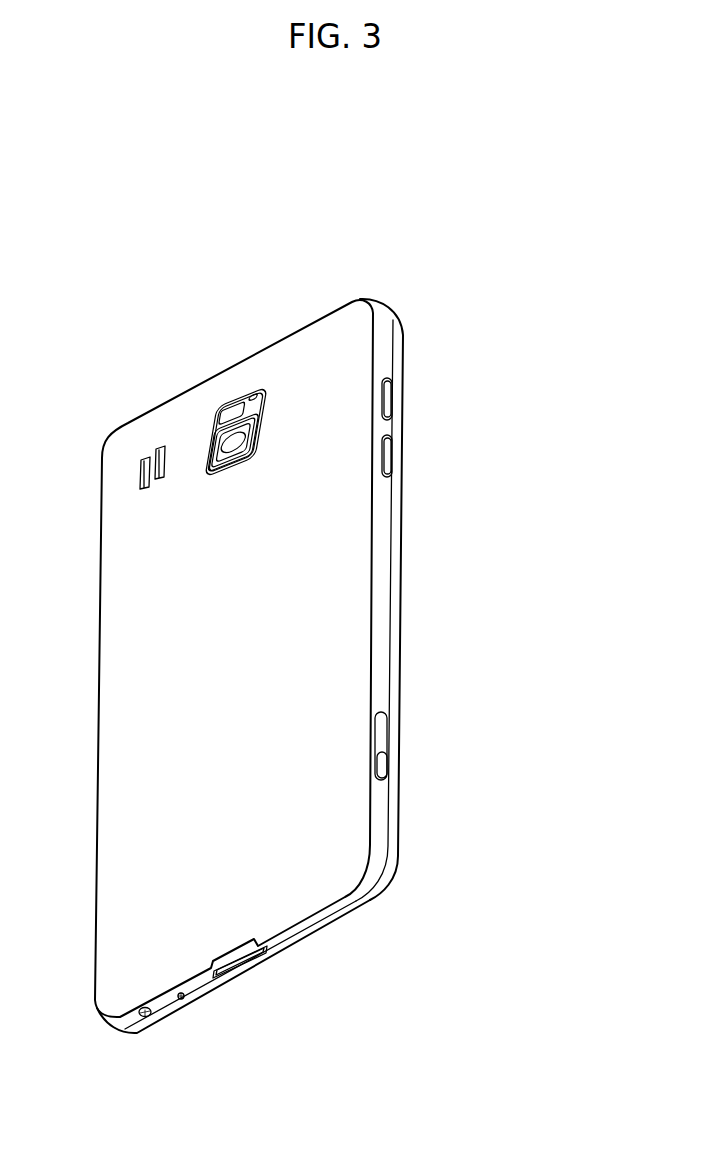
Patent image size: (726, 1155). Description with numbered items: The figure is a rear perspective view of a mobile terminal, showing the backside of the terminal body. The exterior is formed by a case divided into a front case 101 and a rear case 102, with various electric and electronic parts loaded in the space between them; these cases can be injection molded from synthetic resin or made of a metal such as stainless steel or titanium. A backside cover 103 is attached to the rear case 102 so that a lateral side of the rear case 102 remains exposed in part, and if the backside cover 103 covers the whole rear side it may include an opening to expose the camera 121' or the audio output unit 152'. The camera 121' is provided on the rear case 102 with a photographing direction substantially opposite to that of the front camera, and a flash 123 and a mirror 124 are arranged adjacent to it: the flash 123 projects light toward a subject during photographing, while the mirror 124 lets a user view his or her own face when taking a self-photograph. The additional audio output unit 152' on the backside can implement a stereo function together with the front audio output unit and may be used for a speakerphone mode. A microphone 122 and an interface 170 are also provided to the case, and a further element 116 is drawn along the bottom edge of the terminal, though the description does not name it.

The front case 101 is at (378, 898).
The rear case 102 is at (383, 317).
The backside cover 103 is at (340, 850).
The interface unit / earphone jack 116 is at (142, 1018).
The camera 121' is at (242, 379).
The microphone 122 is at (182, 1000).
The flash 123 is at (256, 397).
The mirror 124 is at (222, 410).
The audio output unit 152' is at (132, 415).
The interface 170 is at (247, 962).